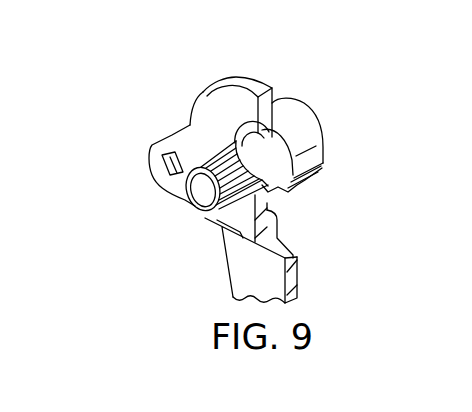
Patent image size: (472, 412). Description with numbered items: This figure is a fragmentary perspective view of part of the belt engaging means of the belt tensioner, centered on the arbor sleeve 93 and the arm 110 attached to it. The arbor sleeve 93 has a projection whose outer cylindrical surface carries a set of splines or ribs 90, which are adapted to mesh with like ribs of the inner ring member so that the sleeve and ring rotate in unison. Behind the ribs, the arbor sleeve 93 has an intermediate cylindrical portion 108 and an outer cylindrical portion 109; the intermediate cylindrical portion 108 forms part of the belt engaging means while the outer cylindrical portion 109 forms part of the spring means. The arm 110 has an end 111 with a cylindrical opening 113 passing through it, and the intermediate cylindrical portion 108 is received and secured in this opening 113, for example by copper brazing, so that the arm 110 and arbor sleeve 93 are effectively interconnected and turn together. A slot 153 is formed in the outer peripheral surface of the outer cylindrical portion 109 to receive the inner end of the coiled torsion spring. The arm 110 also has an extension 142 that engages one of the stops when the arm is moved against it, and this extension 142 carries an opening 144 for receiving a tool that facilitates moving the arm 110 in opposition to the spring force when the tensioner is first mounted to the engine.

The splines or ribs 90 is at (188, 123).
The arbor sleeve 93 is at (322, 135).
The intermediate cylindrical portion 108 is at (273, 150).
The outer cylindrical portion 109 is at (282, 112).
The arm 110 is at (247, 273).
The end of arm 111 is at (240, 82).
The cylindrical opening 113 is at (230, 137).
The extension 142 is at (150, 145).
The opening 144 is at (162, 163).
The slot 153 is at (300, 188).